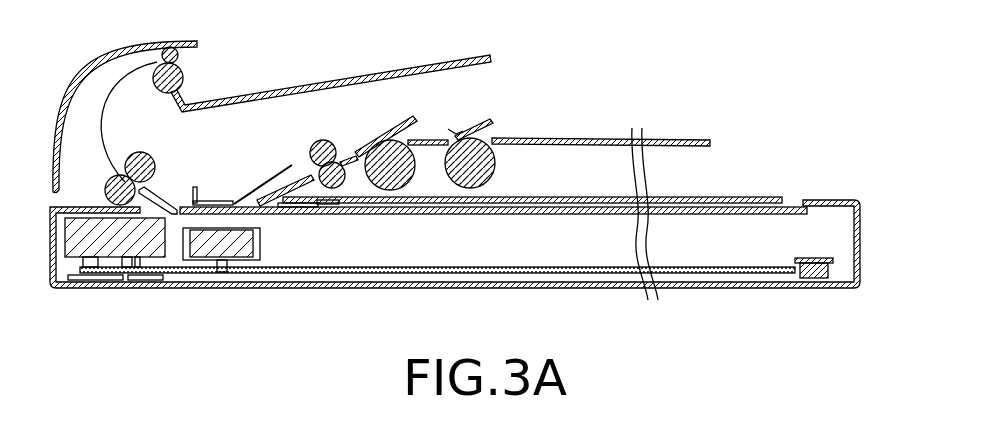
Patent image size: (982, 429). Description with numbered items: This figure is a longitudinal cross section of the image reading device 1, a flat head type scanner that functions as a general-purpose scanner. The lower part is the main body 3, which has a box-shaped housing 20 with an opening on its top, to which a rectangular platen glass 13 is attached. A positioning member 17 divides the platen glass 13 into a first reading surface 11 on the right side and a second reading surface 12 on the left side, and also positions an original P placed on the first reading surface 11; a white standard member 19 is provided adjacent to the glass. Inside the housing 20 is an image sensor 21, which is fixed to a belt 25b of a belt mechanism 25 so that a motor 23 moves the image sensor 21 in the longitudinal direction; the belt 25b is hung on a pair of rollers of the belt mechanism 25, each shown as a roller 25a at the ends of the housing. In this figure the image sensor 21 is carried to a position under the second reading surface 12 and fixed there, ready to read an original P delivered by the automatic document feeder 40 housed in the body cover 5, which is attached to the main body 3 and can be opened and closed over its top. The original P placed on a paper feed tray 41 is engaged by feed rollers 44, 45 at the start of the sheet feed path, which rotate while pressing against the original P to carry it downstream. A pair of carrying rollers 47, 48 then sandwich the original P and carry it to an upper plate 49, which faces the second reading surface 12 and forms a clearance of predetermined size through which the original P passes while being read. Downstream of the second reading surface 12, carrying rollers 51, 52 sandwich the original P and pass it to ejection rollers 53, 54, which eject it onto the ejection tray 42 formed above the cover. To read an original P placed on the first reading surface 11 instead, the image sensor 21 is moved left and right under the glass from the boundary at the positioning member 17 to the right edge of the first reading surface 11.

The image reading device 1 is at (708, 91).
The main body 3 is at (863, 230).
The body cover 5 is at (737, 191).
The first reading surface 11 is at (437, 215).
The second reading surface 12 is at (240, 215).
The platen glass 13 is at (678, 213).
The positioning member 17 is at (330, 209).
The white standard member 19 is at (297, 208).
The housing 20 is at (833, 198).
The image sensor 21 is at (233, 243).
The motor 23 is at (137, 243).
The belt mechanism 25 is at (735, 333).
The connector 25a is at (88, 278).
The belt 25b is at (770, 283).
The automatic document feeder 40 is at (519, 87).
The paper feed tray 41 is at (580, 138).
The ejection tray 42 is at (342, 79).
The feed roller 44 is at (494, 170).
The feed roller 45 is at (412, 139).
The carrying roller 47 is at (320, 167).
The carrying roller 48 is at (313, 142).
The upper plate 49 is at (195, 187).
The carrying roller 51 is at (108, 187).
The carrying roller 52 is at (152, 163).
The ejection roller 53 is at (172, 78).
The ejection roller 54 is at (178, 56).
The original P is at (103, 150).